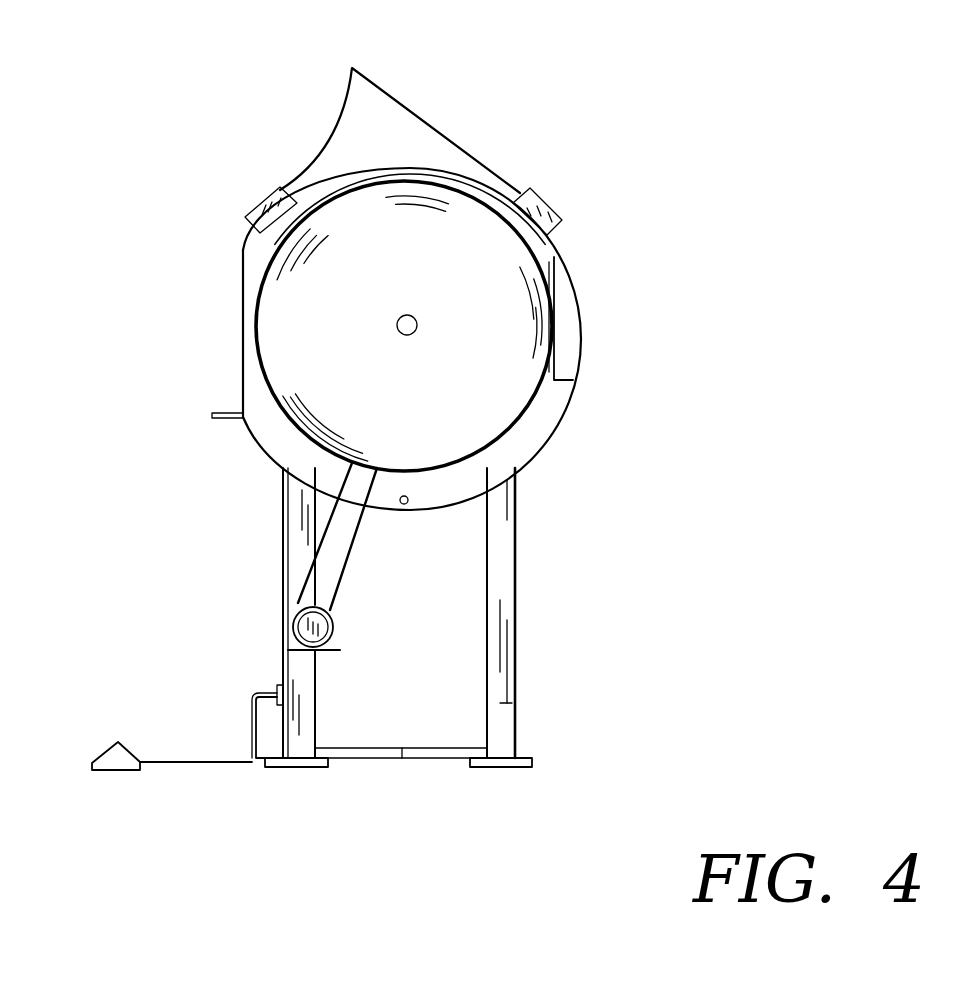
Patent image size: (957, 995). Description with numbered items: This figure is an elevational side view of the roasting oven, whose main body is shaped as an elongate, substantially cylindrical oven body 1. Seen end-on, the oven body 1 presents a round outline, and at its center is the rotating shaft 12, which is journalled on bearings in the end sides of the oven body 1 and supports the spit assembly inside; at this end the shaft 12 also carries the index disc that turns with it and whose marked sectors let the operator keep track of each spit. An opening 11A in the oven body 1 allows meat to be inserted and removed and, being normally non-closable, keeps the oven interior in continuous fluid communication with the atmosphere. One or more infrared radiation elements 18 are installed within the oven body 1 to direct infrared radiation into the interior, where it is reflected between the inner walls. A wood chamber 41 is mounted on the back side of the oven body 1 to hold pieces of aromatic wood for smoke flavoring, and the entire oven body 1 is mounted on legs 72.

The oven body 1 is at (252, 140).
The infrared radiation element 18 is at (410, 133).
The opening 11A is at (237, 335).
The rotating shaft 12 is at (407, 338).
The wood chamber 41 is at (565, 350).
The legs 72 is at (298, 567).